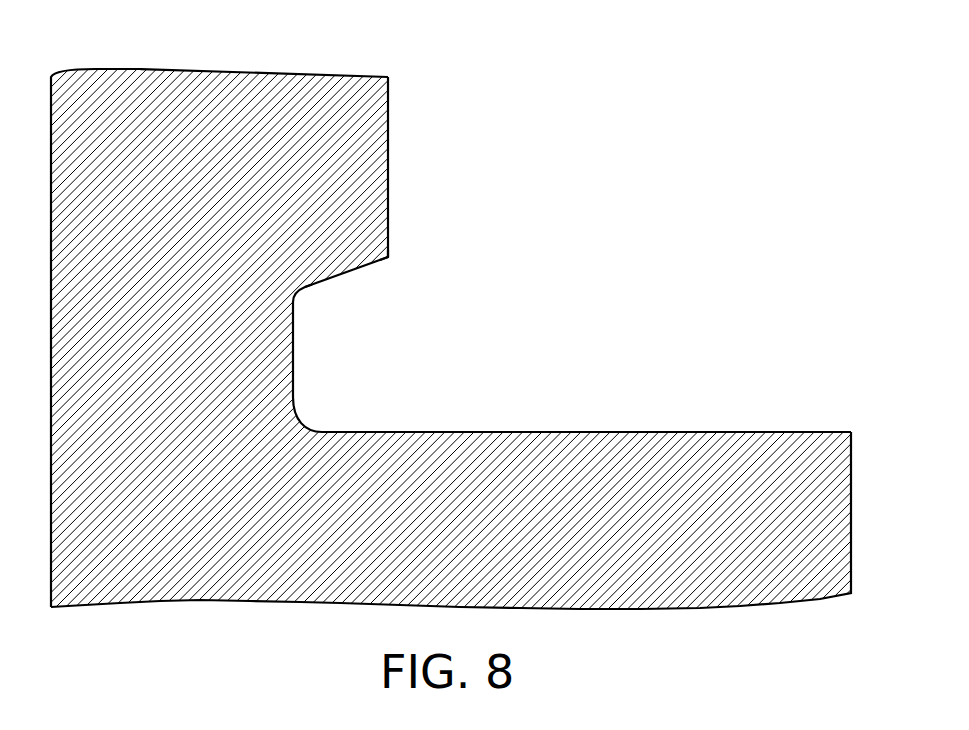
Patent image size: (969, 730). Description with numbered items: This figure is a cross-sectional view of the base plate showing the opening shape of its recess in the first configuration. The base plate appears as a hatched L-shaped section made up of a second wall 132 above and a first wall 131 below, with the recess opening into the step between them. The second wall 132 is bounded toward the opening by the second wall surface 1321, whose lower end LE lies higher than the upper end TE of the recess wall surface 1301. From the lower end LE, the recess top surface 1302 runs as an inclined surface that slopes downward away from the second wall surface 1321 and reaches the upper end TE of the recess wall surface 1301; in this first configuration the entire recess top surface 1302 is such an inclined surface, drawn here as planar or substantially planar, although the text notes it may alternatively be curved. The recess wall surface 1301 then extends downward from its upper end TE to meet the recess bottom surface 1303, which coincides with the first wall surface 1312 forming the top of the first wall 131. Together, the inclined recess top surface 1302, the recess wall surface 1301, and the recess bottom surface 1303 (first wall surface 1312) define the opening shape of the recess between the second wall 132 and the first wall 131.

The second wall 132 is at (181, 87).
The second wall surface 1321 is at (389, 170).
The lower end of the second wall surface LE is at (391, 258).
The recess top surface 1302 is at (349, 272).
The upper end of the recess wall surface TE is at (306, 288).
The recess wall surface 1301 is at (294, 357).
The recess bottom surface 1303 is at (572, 412).
The first wall surface 1312 is at (363, 432).
The first wall 131 is at (651, 446).